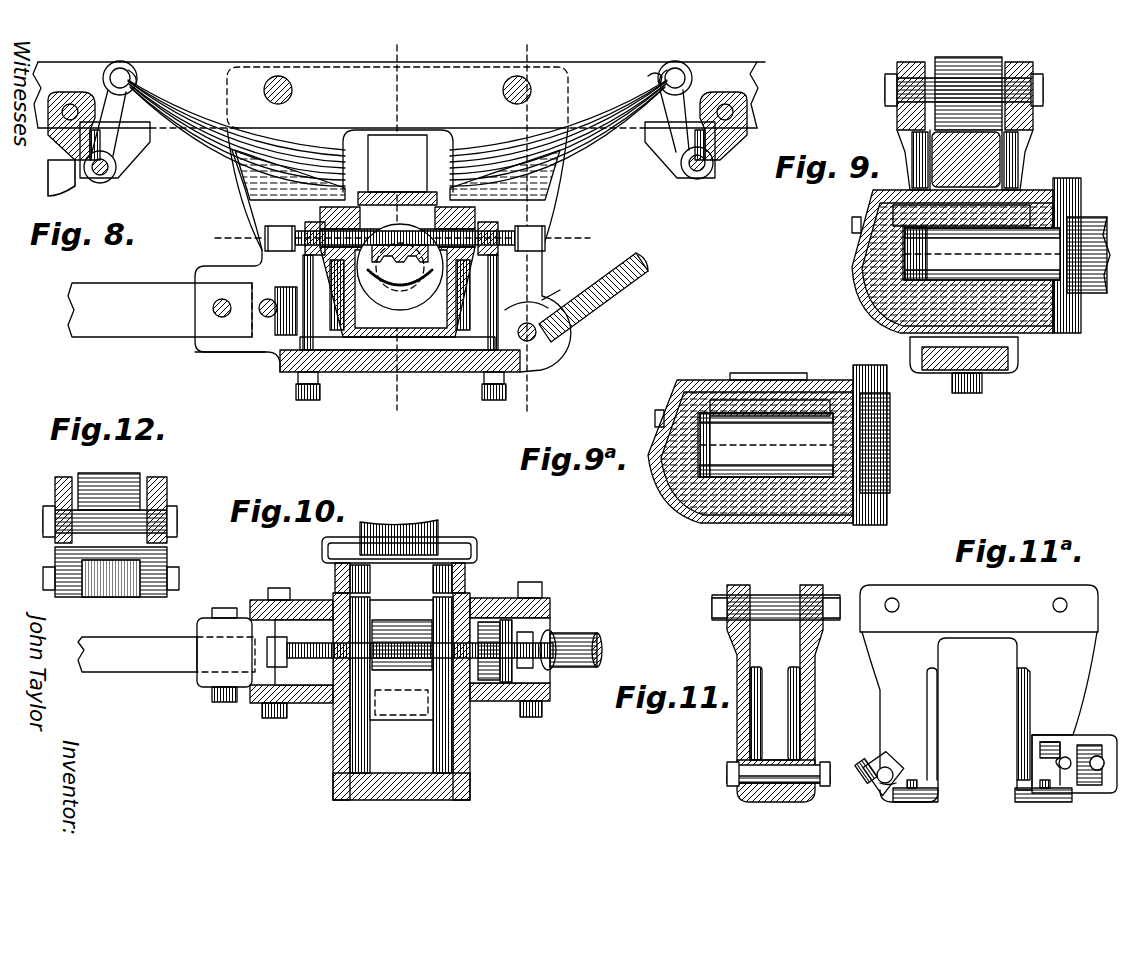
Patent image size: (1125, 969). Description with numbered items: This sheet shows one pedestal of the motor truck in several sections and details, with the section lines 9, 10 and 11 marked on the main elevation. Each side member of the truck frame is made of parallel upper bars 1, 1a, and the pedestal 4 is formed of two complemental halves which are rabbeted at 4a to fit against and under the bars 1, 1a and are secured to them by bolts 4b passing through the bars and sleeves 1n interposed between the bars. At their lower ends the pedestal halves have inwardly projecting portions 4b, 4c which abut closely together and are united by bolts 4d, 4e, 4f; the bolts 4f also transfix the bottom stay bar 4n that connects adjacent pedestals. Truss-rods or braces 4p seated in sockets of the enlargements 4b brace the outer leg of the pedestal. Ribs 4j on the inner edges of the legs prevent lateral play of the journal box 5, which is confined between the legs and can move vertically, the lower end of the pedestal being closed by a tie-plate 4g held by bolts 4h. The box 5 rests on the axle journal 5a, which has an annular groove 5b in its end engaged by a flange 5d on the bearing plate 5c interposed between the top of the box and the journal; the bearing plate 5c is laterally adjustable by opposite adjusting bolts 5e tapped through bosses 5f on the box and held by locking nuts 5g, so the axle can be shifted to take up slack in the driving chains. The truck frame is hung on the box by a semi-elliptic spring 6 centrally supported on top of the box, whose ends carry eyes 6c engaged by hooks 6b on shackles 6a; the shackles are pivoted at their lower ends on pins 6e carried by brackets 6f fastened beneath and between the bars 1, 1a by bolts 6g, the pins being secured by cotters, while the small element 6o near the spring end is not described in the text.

In FIG. 12, the upper bar 1 is at (168, 496).
In FIG. 11, the upper bar 1 is at (737, 590).
In FIG. 8, the upper bar 1a is at (600, 68).
In FIG. 12, the upper bar 1a is at (58, 496).
In FIG. 11, the upper bar 1a is at (810, 596).
In FIG. 8, the sleeve 1n is at (276, 86).
In FIG. 9, the sleeve 1n is at (962, 90).
In FIG. 11, the sleeve 1n is at (777, 596).
In FIG. 8, the pedestal 4 is at (550, 172).
In FIG. 9, the pedestal 4 is at (906, 146).
In FIG. 10, the pedestal 4 is at (548, 602).
In FIG. 11, the pedestal 4 is at (738, 664).
In FIG. 11A, the pedestal 4 is at (890, 704).
In FIG. 8, the rabbet 4a is at (558, 330).
In FIG. 9, the rabbet 4a is at (906, 112).
In FIG. 11, the rabbet 4a is at (730, 636).
In FIG. 11A, the rabbet 4a is at (1002, 630).
In FIG. 8, the bolt 4b is at (290, 82).
In FIG. 9, the bolt 4b is at (1040, 82).
In FIG. 10, the bolt 4b is at (540, 636).
In FIG. 11, the bolt 4b is at (716, 606).
In FIG. 11A, the bolt 4b is at (888, 788).
In FIG. 8, the inwardly projecting portion 4c is at (236, 346).
In FIG. 10, the inwardly projecting portion 4c is at (214, 646).
In FIG. 11A, the inwardly projecting portion 4c is at (1064, 786).
In FIG. 10, the bolt 4d is at (530, 718).
In FIG. 11, the bolt 4d is at (762, 776).
In FIG. 8, the bolt 4e is at (266, 316).
In FIG. 10, the bolt 4e is at (276, 720).
In FIG. 8, the bolt 4f is at (218, 314).
In FIG. 10, the bolt 4f is at (226, 704).
In FIG. 8, the tie-plate 4g is at (452, 374).
In FIG. 9, the tie-plate 4g is at (986, 372).
In FIG. 8, the bolt 4h is at (300, 388).
In FIG. 9, the bolt 4h is at (968, 394).
In FIG. 10, the rib 4j is at (466, 706).
In FIG. 11, the rib 4j is at (792, 690).
In FIG. 11A, the rib 4j is at (1016, 700).
In FIG. 8, the stay bar 4n is at (122, 300).
In FIG. 10, the stay bar 4n is at (150, 665).
In FIG. 8, the brace 4p is at (612, 284).
In FIG. 10, the brace 4p is at (582, 642).
In FIG. 8, the journal box 5 is at (386, 332).
In FIG. 9, the journal box 5 is at (900, 194).
In FIG. 9A, the journal box 5 is at (776, 514).
In FIG. 10, the journal box 5 is at (446, 764).
In FIG. 8, the journal 5a is at (412, 270).
In FIG. 9, the journal 5a is at (1090, 226).
In FIG. 9A, the journal 5a is at (880, 442).
In FIG. 10, the journal 5a is at (392, 526).
In FIG. 9, the annular groove 5b is at (906, 286).
In FIG. 8, the bearing plate 5c is at (300, 214).
In FIG. 9, the bearing plate 5c is at (852, 226).
In FIG. 9A, the bearing plate 5c is at (722, 394).
In FIG. 10, the bearing plate 5c is at (401, 660).
In FIG. 9, the flange 5d is at (904, 242).
In FIG. 8, the adjusting bolt 5e is at (283, 240).
In FIG. 10, the adjusting bolt 5e is at (270, 650).
In FIG. 8, the boss 5f is at (340, 270).
In FIG. 10, the boss 5f is at (300, 620).
In FIG. 8, the locking nut 5g is at (312, 226).
In FIG. 8, the semi-elliptic spring 6 is at (290, 152).
In FIG. 9, the semi-elliptic spring 6 is at (996, 164).
In FIG. 8, the shackle 6a is at (116, 112).
In FIG. 9, the shackle 6a is at (945, 72).
In FIG. 12, the shackle 6a is at (124, 486).
In FIG. 8, the hook 6b is at (123, 63).
In FIG. 8, the eye 6c is at (132, 74).
In FIG. 8, the pin 6e is at (88, 172).
In FIG. 12, the pin 6e is at (178, 574).
In FIG. 8, the bracket 6f is at (128, 150).
In FIG. 12, the bracket 6f is at (56, 566).
In FIG. 8, the bolt 6g is at (56, 118).
In FIG. 12, the bolt 6g is at (170, 522).
In FIG. 8, the spring clip 6o is at (652, 80).
In FIG. 8, the section line 9— 9 is at (395, 225).
In FIG. 8, the section line 10— 10 is at (399, 239).
In FIG. 10, the section line 10— 10 is at (420, 650).
In FIG. 8, the section line 11— 11 is at (527, 215).